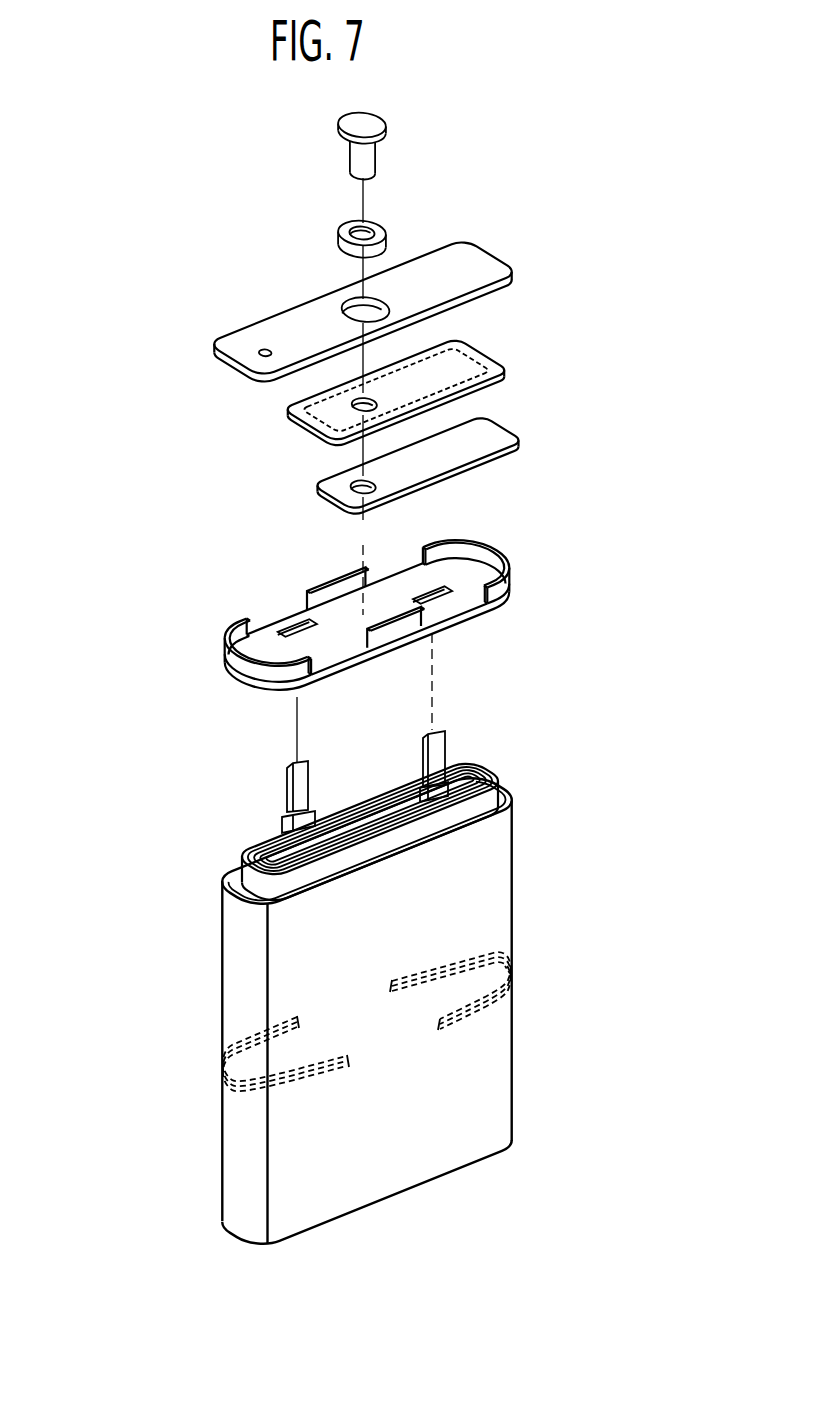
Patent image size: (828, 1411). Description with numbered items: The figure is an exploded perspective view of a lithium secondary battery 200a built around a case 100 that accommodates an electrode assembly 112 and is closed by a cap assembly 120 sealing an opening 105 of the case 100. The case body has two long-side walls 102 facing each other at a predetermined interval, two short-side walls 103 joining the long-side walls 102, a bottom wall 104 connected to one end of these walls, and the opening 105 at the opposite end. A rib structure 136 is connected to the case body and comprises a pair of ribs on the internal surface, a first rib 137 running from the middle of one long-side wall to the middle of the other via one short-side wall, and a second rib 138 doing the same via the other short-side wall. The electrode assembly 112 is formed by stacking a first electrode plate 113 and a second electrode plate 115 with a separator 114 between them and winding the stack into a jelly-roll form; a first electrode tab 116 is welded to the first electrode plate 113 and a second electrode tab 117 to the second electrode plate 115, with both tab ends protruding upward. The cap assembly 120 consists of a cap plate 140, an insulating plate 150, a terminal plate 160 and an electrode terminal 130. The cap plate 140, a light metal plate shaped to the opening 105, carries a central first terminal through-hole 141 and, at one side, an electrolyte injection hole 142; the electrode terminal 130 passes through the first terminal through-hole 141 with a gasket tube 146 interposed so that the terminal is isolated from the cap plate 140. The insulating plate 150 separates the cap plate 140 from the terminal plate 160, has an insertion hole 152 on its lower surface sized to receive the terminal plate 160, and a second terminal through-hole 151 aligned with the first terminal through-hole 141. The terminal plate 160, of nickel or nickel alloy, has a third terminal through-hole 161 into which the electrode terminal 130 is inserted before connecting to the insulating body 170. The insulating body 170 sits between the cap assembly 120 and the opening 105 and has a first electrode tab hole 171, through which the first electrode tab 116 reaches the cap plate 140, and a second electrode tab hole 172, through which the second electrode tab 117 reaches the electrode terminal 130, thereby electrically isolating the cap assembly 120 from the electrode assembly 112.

The lithium secondary battery 200a is at (362, 689).
The case 100 is at (380, 969).
The long-side walls 102 is at (441, 1022).
The short-side walls 103 is at (183, 1051).
The bottom wall 104 is at (367, 1202).
The opening 105 is at (412, 843).
The electrode assembly 112 is at (377, 779).
The first electrode plate 113 is at (403, 796).
The separator 114 is at (387, 782).
The second electrode plate 115 is at (370, 779).
The first electrode tab 116 is at (251, 797).
The second electrode tab 117 is at (414, 747).
The cap assembly 120 is at (420, 354).
The electrode terminal 130 is at (459, 141).
The rib structure 136 is at (561, 1000).
The first rib 137 is at (514, 976).
The second rib 138 is at (235, 1069).
The cap plate 140 is at (390, 307).
The first terminal through-hole 141 is at (334, 282).
The electrolyte injection hole 142 is at (232, 321).
The gasket tube 146 is at (321, 224).
The insulating plate 150 is at (391, 406).
The second terminal through-hole 151 is at (312, 441).
The insertion hole 152 is at (344, 398).
The terminal plate 160 is at (419, 470).
The third terminal through-hole 161 is at (319, 516).
The insulating body 170 is at (340, 609).
The first electrode tab hole 171 is at (244, 604).
The second electrode tab hole 172 is at (492, 561).